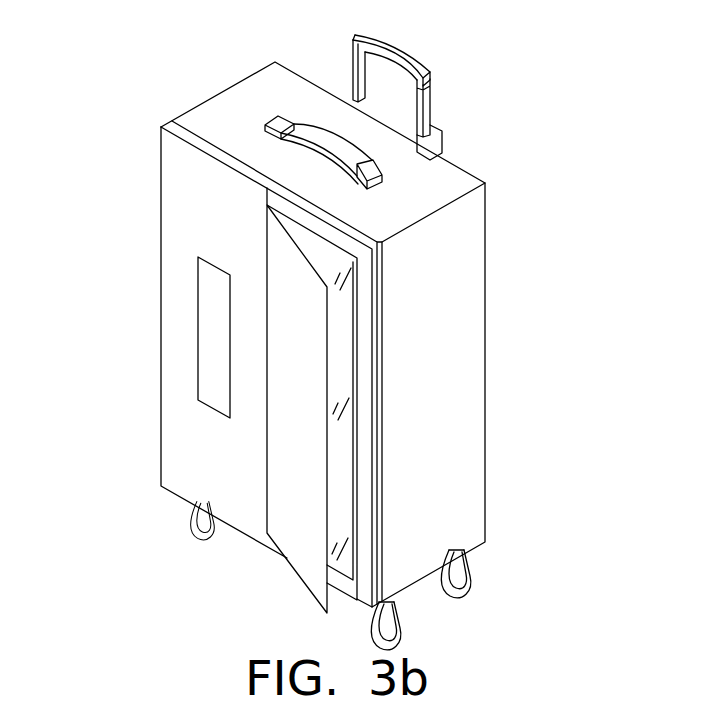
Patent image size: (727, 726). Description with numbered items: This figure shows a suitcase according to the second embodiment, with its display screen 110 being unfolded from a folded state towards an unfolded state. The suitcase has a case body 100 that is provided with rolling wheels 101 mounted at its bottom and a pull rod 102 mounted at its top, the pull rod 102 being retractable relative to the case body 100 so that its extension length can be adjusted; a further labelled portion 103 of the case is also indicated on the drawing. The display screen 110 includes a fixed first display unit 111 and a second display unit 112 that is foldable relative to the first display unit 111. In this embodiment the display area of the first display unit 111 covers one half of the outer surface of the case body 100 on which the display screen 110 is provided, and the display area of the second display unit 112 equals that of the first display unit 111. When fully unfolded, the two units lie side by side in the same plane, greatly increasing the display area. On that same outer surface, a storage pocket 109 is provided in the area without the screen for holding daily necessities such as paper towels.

The case body 100 is at (338, 342).
The rolling wheels 101 is at (477, 574).
The pull rod 102 is at (430, 104).
The case body 103 is at (178, 161).
The storage pocket 109 is at (212, 337).
The display screen 110 is at (452, 400).
The first display unit 111 is at (345, 440).
The second display unit 112 is at (318, 370).